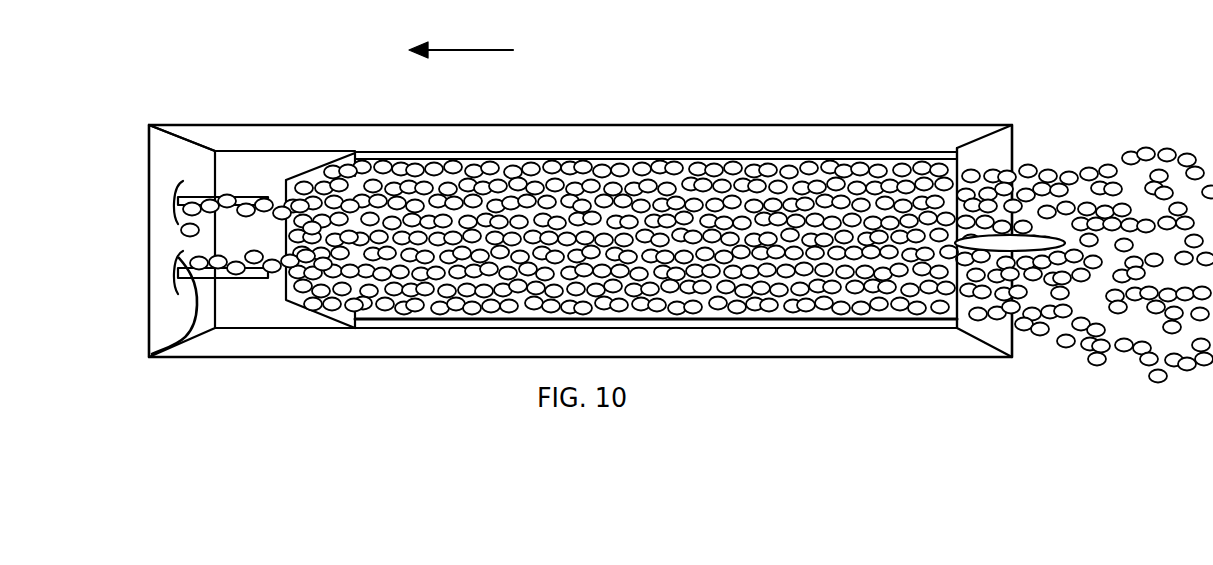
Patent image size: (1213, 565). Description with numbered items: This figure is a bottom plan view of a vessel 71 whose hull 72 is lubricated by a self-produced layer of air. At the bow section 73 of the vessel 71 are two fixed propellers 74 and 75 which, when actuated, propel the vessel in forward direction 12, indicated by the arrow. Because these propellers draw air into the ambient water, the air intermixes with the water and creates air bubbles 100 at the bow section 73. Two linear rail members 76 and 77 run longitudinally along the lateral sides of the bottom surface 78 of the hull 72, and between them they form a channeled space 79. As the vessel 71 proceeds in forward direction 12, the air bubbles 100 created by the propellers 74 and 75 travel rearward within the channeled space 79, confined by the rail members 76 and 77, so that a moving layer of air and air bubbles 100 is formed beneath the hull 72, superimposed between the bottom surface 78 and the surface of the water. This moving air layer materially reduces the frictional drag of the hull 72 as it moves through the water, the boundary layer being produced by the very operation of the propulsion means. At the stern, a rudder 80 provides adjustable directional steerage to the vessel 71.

The forward direction 12 is at (460, 50).
The vessel 71 is at (782, 121).
The hull 72 is at (583, 140).
The bow section 73 is at (168, 124).
The fixed propeller 74 is at (181, 186).
The fixed propeller 75 is at (150, 357).
The linear rail member 76 is at (445, 152).
The linear rail member 77 is at (697, 322).
The bottom surface 78 is at (920, 180).
The channeled space 79 is at (663, 205).
The rudder 80 is at (1010, 252).
The air bubbles 100 is at (697, 191).